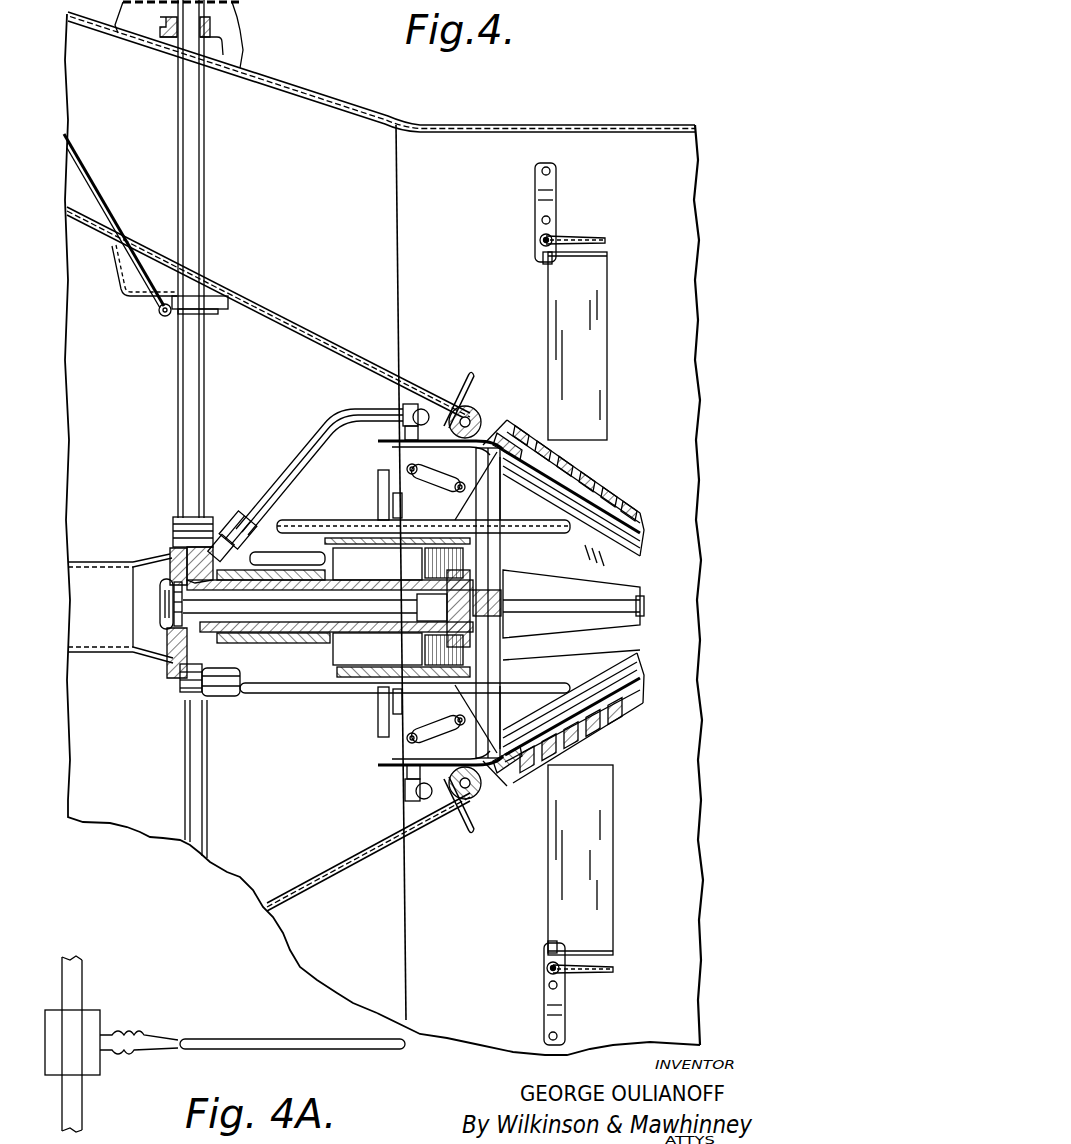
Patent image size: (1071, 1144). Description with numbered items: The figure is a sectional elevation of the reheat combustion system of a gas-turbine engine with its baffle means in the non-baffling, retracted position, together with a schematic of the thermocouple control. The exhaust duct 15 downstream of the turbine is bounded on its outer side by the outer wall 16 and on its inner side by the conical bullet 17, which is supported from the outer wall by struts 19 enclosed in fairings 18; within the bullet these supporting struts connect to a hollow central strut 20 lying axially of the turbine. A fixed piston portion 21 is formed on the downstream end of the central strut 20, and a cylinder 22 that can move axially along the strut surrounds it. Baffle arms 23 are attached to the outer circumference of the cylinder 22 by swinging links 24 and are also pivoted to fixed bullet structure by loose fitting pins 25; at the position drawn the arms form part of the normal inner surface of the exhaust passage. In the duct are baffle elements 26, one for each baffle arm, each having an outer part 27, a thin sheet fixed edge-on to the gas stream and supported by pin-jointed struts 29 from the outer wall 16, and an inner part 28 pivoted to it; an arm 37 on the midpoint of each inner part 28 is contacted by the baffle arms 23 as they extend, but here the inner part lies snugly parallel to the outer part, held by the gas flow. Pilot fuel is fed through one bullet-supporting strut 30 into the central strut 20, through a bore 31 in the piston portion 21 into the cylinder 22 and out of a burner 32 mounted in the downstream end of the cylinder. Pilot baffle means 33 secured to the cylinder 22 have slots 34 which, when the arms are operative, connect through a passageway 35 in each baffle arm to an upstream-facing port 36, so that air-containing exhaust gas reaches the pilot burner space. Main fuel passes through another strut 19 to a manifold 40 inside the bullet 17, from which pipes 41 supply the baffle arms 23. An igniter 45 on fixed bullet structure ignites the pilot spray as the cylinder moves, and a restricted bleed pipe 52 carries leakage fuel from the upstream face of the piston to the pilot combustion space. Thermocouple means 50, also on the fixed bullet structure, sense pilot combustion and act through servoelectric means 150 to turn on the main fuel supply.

In FIG. 4, the exhaust duct 15 is at (540, 280).
In FIG. 4, the outer wall 16 is at (297, 86).
In FIG. 4, the bullet 17 is at (283, 320).
In FIG. 4, the fairings 18 is at (382, 194).
In FIG. 4, the struts 19 is at (200, 168).
In FIG. 4A, the struts 19 is at (76, 980).
In FIG. 4, the central strut 20 is at (135, 564).
In FIG. 4, the piston portion 21 is at (423, 648).
In FIG. 4, the cylinder 22 is at (398, 564).
In FIG. 4, the baffle arms 23 is at (634, 535).
In FIG. 4, the swinging links 24 is at (392, 496).
In FIG. 4, the loose fitting pins 25 is at (463, 405).
In FIG. 4, the baffle elements 26 is at (576, 228).
In FIG. 4, the outer part 27 is at (596, 237).
In FIG. 4, the inner part 28 is at (607, 263).
In FIG. 4, the struts 29 is at (535, 200).
In FIG. 4, the bullet-supporting strut 30 is at (210, 756).
In FIG. 4, the bore 31 is at (450, 603).
In FIG. 4, the burner 32 is at (496, 598).
In FIG. 4, the pilot baffle means 33 is at (497, 500).
In FIG. 4, the slots 34 is at (405, 672).
In FIG. 4, the passageway 35 is at (397, 450).
In FIG. 4, the port 36 is at (488, 430).
In FIG. 4, the arm 37 is at (545, 262).
In FIG. 4, the manifold 40 is at (410, 405).
In FIG. 4, the pipes 41 is at (462, 378).
In FIG. 4, the igniter 45 is at (550, 535).
In FIG. 4, the thermocouple means 50 is at (547, 684).
In FIG. 4A, the thermocouple means 50 is at (247, 1040).
In FIG. 4, the restricted bleed pipe 52 is at (353, 677).
In FIG. 4A, the servoelectric means 150 is at (100, 1016).